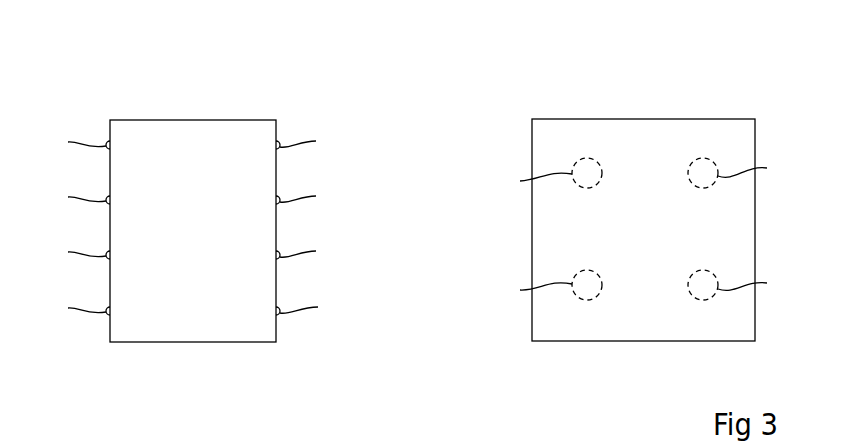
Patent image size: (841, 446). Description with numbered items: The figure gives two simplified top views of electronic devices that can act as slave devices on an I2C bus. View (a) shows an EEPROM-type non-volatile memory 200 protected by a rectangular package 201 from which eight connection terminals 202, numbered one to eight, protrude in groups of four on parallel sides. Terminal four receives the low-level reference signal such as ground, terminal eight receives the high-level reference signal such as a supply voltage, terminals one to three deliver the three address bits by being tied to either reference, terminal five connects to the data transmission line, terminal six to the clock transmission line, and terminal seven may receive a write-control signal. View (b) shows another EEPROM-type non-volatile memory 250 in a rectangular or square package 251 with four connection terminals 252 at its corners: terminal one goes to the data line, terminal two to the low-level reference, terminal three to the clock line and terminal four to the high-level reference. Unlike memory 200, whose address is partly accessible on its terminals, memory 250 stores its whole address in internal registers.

The EEPROM-type non-volatile memory 200 is at (207, 103).
The rectangular package 201 is at (193, 328).
The connection terminals 202 is at (106, 140).
The EEPROM-type non-volatile memory 250 is at (628, 100).
The package 251 is at (677, 130).
The connection terminals 252 is at (583, 158).